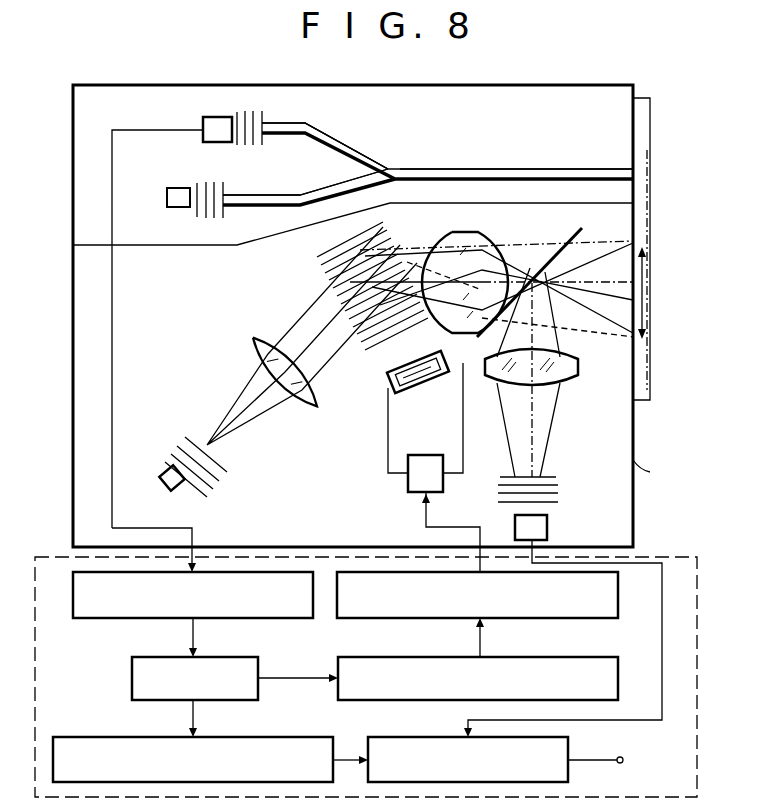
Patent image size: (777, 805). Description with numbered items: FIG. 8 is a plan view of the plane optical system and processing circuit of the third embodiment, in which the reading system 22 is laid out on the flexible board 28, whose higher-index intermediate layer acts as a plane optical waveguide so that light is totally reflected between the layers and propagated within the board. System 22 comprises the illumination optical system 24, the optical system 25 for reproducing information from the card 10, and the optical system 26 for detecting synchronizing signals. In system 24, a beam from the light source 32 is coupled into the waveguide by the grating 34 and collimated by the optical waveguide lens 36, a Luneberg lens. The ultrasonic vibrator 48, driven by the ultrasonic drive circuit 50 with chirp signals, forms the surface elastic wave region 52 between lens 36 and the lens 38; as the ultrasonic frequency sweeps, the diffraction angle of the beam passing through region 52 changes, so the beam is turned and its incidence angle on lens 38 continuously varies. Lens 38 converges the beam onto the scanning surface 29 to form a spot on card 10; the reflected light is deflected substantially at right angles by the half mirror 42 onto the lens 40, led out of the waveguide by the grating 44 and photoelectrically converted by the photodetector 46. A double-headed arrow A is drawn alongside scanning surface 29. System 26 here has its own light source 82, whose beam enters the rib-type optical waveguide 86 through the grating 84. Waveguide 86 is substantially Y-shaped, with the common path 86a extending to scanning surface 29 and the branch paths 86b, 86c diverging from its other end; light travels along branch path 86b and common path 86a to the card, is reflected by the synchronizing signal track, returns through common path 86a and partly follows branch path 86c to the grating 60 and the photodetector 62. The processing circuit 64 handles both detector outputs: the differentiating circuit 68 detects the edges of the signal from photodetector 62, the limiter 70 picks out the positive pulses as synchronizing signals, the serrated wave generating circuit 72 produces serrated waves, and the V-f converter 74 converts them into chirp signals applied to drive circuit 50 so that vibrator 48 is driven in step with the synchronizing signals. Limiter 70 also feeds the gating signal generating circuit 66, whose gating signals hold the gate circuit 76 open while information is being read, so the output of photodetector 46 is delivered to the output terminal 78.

The card 10 is at (650, 147).
The system 22 is at (103, 390).
The illumination optical system 24 is at (236, 322).
The optical system for reproducing information 25 is at (608, 408).
The optical system for detecting synchronizing signals 26 is at (396, 150).
The board 28 is at (92, 291).
The scanning surface 29 is at (650, 472).
The light source 32 is at (183, 488).
The grating 34 is at (186, 437).
The optical waveguide lens 36 is at (316, 402).
The lens 38 is at (470, 237).
The lens 40 is at (573, 372).
The half mirror 42 is at (570, 232).
The grating 44 is at (559, 488).
The photodetector 46 is at (548, 527).
The ultrasonic vibrator 48 is at (430, 388).
The ultrasonic drive circuit 50 is at (408, 484).
The surface elastic wave region 52 is at (306, 272).
The grating 60 is at (246, 113).
The photodetector 62 is at (215, 117).
The processing circuit 64 is at (55, 556).
The gating signal generating circuit 66 is at (299, 737).
The differentiating circuit 68 is at (113, 619).
The limiter 70 is at (258, 662).
The serrated wave generating circuit 72 is at (618, 688).
The V-f converter 74 is at (618, 597).
The gate circuit 76 is at (433, 737).
The output terminal 78 is at (623, 760).
The light source 82 is at (183, 208).
The grating 84 is at (209, 182).
The rib-type optical waveguide 86 is at (476, 167).
The common path 86a is at (535, 170).
The branch path 86b is at (274, 193).
The branch path 86c is at (352, 142).
The scanning direction A is at (644, 292).